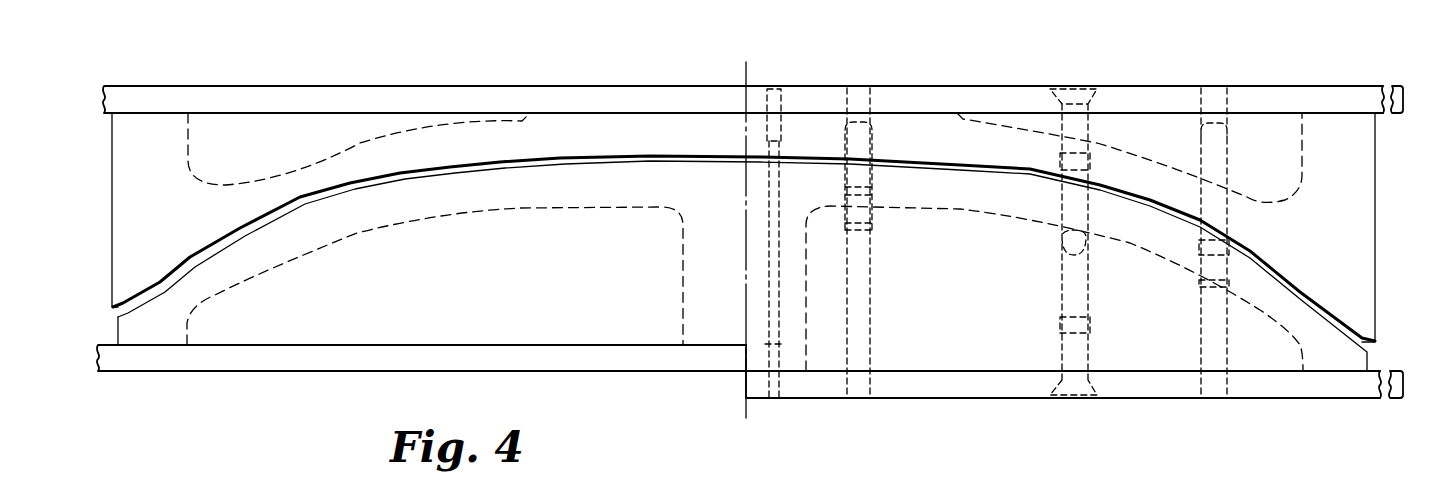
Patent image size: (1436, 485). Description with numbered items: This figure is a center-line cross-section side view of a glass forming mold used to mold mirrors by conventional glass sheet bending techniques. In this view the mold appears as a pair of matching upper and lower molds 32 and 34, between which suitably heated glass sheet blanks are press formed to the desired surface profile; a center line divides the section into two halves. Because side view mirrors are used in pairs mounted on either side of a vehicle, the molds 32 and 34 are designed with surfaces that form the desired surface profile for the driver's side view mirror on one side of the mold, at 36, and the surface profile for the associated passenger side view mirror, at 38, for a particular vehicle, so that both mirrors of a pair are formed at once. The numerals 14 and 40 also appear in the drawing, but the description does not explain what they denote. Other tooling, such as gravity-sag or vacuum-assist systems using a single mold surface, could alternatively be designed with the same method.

The frame assembly 14 is at (749, 0).
The upper mold 32 is at (1133, 128).
The lower mold 34 is at (1248, 267).
The driver's side view mirror surface profile 36 is at (562, 157).
The passenger side view mirror surface profile 38 is at (998, 166).
The lower sloped outline 40 is at (1288, 280).